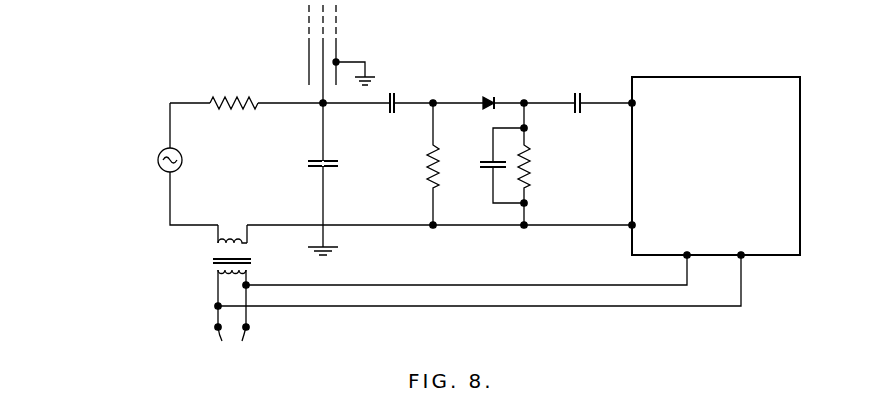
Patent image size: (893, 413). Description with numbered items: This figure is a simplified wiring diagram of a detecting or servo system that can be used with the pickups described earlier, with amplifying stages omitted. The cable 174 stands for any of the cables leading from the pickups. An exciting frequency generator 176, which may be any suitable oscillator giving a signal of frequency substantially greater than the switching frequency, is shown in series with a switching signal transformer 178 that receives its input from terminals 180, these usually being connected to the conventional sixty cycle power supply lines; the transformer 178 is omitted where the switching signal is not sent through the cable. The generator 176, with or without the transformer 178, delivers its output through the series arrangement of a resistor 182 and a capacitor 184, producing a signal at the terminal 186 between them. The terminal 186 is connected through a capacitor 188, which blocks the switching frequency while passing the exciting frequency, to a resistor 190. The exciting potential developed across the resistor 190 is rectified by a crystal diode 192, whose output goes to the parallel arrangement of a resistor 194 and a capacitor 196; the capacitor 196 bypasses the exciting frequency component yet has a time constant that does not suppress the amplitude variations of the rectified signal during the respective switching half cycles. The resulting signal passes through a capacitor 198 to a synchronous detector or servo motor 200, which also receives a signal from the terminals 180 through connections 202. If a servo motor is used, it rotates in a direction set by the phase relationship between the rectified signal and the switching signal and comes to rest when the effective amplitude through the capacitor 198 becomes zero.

The cable 174 is at (338, 50).
The exciting frequency generator 176 is at (158, 159).
The switching signal transformer 178 is at (209, 266).
The terminals 180 is at (221, 333).
The resistor 182 is at (227, 96).
The capacitor 184 is at (335, 160).
The terminal 186 is at (320, 108).
The capacitor 188 is at (397, 98).
The resistor 190 is at (424, 160).
The crystal diode 192 is at (495, 98).
The resistor 194 is at (532, 160).
The capacitor 196 is at (488, 170).
The capacitor 198 is at (584, 98).
The synchronous detector or servo motor 200 is at (715, 77).
The connections 202 is at (492, 284).